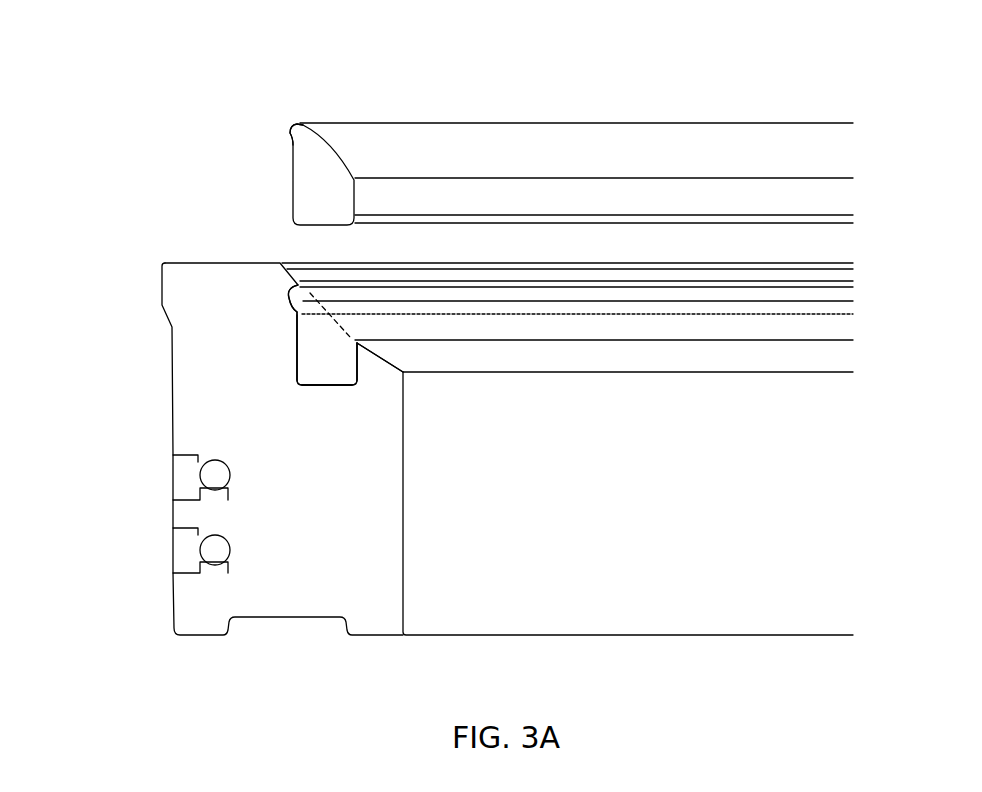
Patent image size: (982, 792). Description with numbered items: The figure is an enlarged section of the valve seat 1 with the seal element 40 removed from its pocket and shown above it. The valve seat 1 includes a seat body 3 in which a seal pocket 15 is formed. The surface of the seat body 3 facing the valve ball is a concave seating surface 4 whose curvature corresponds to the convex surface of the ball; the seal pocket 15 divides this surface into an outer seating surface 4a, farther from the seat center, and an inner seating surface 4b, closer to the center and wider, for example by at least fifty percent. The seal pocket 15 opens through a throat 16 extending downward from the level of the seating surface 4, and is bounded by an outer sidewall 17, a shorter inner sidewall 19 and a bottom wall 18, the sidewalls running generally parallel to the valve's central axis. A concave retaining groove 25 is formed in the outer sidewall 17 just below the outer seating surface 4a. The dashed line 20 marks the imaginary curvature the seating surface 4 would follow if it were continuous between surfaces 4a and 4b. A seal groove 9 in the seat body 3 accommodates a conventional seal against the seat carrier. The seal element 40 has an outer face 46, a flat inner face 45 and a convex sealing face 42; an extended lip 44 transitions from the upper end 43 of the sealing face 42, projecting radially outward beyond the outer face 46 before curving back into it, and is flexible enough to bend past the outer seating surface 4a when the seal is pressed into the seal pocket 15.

The valve seat 1 is at (440, 434).
The seat body 3 is at (492, 434).
The concave seating surface 4 is at (615, 290).
The outer seating surface 4a is at (828, 272).
The inner seating surface 4b is at (843, 355).
The seal groove 9 is at (198, 544).
The seal pocket 15 is at (275, 344).
The throat 16 is at (350, 316).
The outer sidewall 17 is at (293, 378).
The bottom wall 18 is at (325, 390).
The inner sidewall 19 is at (363, 372).
The dashed line 20 is at (352, 330).
The concave retaining groove 25 is at (289, 295).
The seal element 40 is at (547, 123).
The sealing face 42 is at (603, 123).
The upper end of sealing face 43 is at (467, 123).
The extended lip 44 is at (288, 130).
The inner face 45 is at (833, 200).
The outer face 46 is at (292, 177).